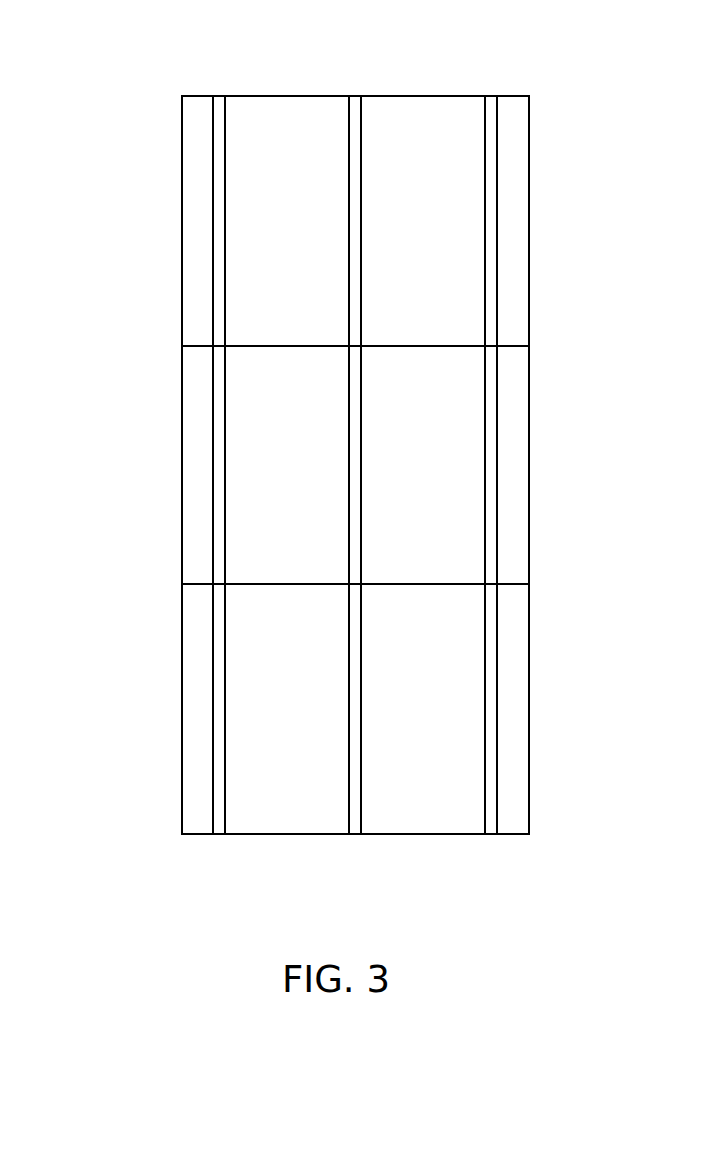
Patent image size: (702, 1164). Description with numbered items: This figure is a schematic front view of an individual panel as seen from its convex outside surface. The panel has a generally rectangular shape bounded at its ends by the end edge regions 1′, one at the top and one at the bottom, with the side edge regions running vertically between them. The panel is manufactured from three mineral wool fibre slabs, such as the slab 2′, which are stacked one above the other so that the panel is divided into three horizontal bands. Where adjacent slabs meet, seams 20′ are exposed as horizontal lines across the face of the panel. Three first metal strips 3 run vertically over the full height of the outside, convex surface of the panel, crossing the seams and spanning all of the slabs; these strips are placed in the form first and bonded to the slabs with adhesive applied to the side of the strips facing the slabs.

The end edge region 1′ is at (417, 78).
The slab 2′ is at (517, 701).
The first metal strip 3 is at (220, 431).
The seam 20′ is at (283, 584).